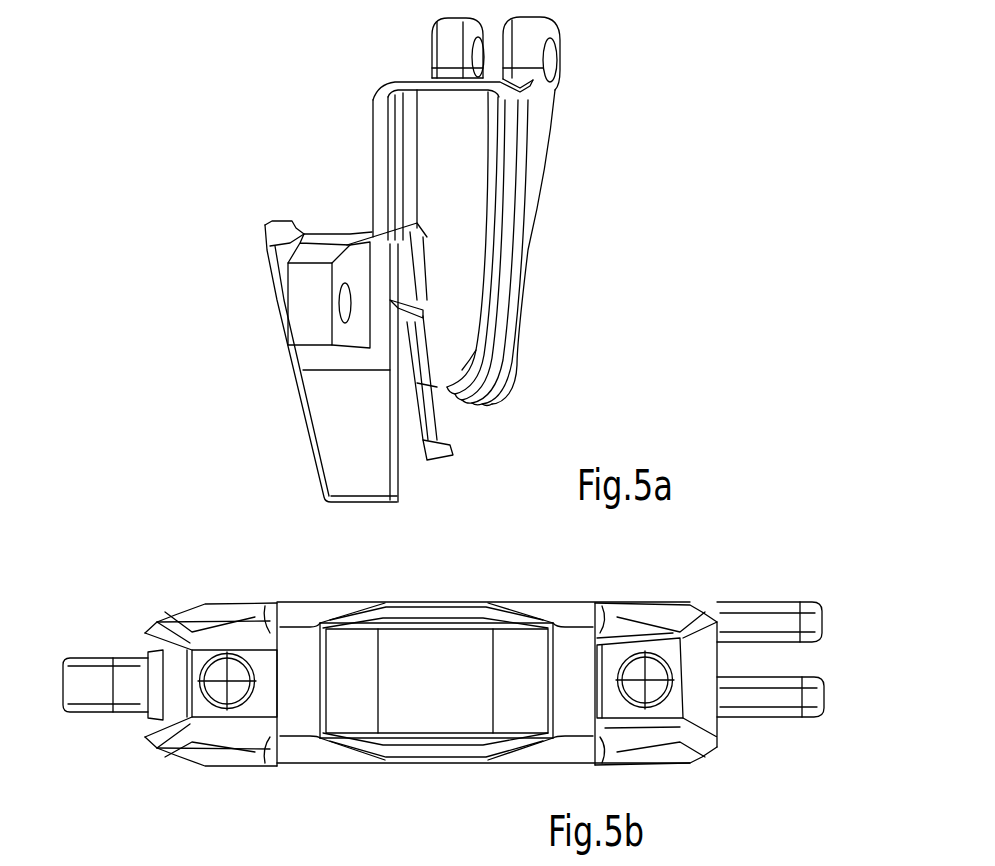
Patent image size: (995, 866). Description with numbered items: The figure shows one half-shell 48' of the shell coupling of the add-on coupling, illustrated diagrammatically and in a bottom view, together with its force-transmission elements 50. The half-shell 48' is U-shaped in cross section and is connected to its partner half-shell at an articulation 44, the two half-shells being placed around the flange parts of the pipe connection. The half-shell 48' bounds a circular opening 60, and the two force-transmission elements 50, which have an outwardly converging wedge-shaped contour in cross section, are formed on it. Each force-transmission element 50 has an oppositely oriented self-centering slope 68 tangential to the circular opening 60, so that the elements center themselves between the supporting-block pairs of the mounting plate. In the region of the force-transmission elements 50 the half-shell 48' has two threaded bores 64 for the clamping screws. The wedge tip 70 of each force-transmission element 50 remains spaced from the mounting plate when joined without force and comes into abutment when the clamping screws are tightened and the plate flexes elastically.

In FIG. 5A, the articulation 44 is at (548, 68).
In FIG. 5B, the articulation 44 is at (850, 854).
In FIG. 5A, the half-shell 48' is at (558, 362).
In FIG. 5B, the half-shell 48' is at (483, 635).
In FIG. 5A, the force-transmission element 50 is at (350, 437).
In FIG. 5B, the force-transmission element 50 is at (261, 661).
In FIG. 5A, the circular opening 60 is at (425, 130).
In FIG. 5B, the threaded bore 64 is at (238, 690).
In FIG. 5A, the self-centering slope 68 is at (405, 432).
In FIG. 5B, the self-centering slope 68 is at (203, 657).
In FIG. 5A, the wedge tip 70 is at (350, 505).
In FIG. 5B, the wedge tip 70 is at (175, 618).